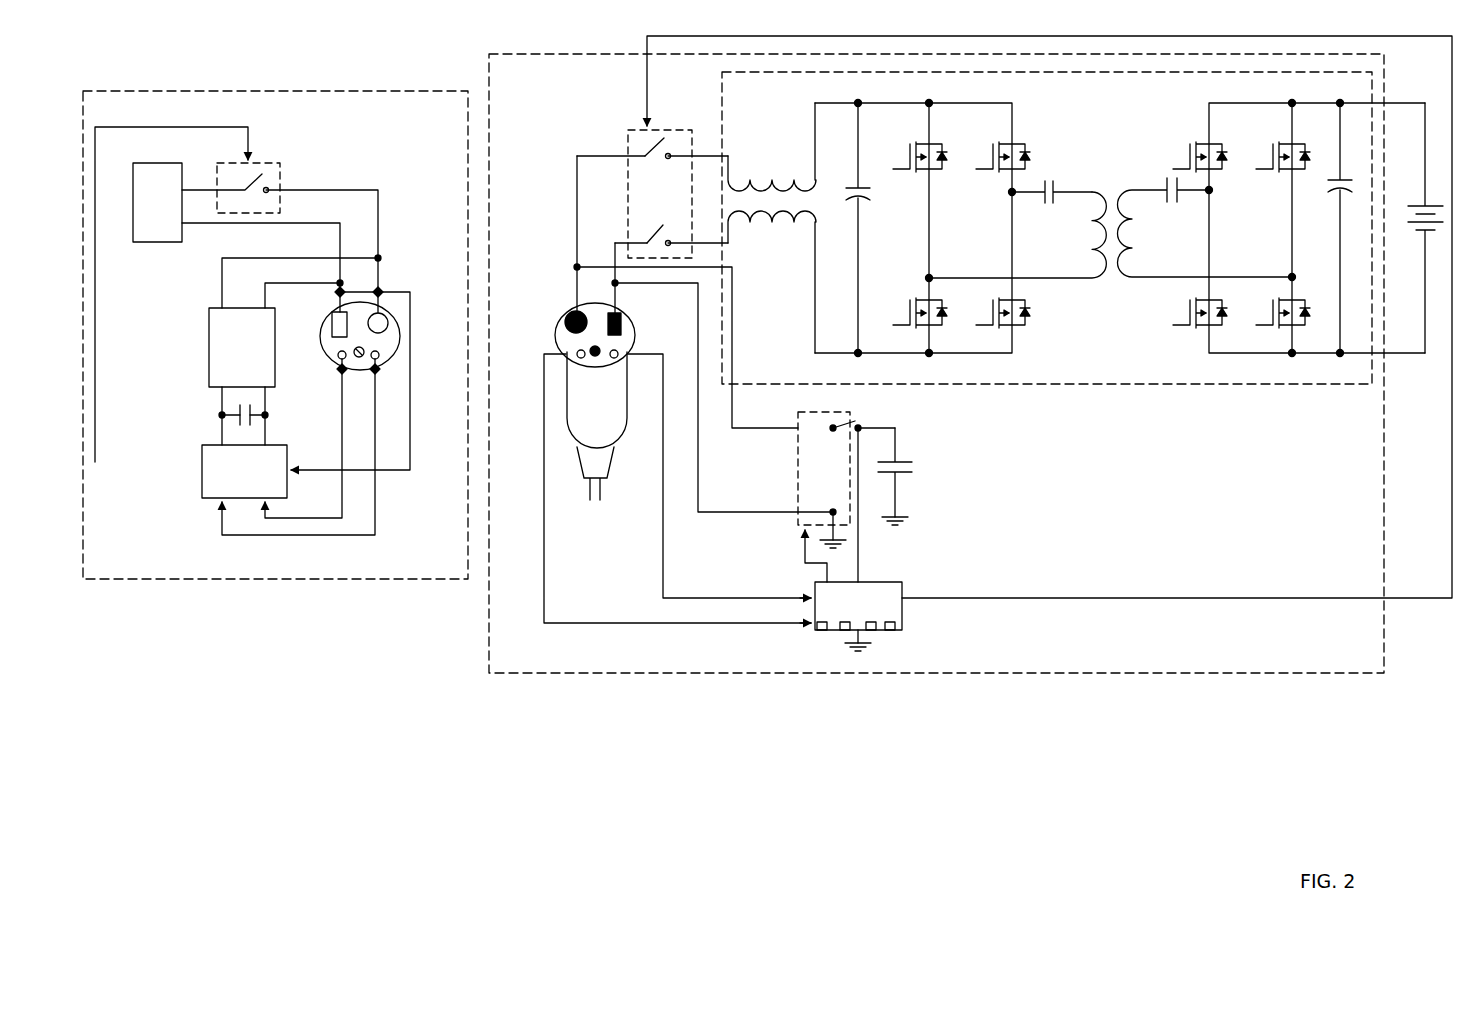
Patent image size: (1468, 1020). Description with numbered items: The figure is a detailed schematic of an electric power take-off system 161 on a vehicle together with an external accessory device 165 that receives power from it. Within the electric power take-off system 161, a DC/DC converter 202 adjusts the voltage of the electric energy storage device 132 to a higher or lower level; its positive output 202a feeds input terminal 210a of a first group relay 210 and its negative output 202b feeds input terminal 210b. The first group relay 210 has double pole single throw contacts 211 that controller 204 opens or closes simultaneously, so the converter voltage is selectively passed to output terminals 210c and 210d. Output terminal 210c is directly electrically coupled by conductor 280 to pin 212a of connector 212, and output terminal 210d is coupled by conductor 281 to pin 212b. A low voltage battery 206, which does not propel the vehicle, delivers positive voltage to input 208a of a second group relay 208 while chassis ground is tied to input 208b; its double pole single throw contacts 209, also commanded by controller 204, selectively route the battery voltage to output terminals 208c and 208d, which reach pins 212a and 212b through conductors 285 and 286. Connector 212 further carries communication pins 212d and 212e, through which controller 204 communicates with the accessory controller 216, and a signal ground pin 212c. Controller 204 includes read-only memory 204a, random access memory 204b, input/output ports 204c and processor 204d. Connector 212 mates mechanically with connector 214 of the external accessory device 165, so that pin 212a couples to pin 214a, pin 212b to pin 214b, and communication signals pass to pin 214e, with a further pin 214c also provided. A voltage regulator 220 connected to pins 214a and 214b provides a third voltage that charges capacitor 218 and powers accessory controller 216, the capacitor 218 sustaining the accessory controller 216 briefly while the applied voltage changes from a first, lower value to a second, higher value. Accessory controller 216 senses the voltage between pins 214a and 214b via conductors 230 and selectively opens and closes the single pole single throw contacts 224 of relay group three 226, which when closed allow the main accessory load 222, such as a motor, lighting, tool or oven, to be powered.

The electric energy storage device 132 is at (1410, 228).
The electric power take-off system 161 is at (1045, 675).
The external accessory device 165 is at (180, 580).
The DC/DC converter 202 is at (1035, 385).
The output of the DC/DC converter 202a is at (730, 158).
The negative output of the DC/DC converter 202b is at (730, 248).
The controller 204 is at (865, 625).
The read-only memory 204a is at (820, 632).
The random access memory 204b is at (844, 632).
The input/output ports 204c is at (872, 632).
The processor 204d is at (892, 632).
The low voltage battery 206 is at (911, 478).
The second group relay 208 is at (825, 483).
The input of second group relay 208a is at (862, 426).
The input of second group relay 208b is at (838, 525).
The output terminal 208c is at (795, 427).
The output terminal 208d is at (800, 512).
The double pole single throw contacts 209 is at (818, 433).
The first group relay 210 is at (662, 184).
The input terminal 210a is at (693, 152).
The input terminal 210b is at (690, 242).
The output terminal 210c is at (630, 156).
The output terminal 210d is at (628, 240).
The double pole single throw contacts 211 is at (650, 164).
The connector 212 is at (605, 389).
The pin 212a is at (570, 313).
The pin 212b is at (622, 323).
The signal ground pin 212c is at (595, 357).
The pin 212d is at (578, 352).
The pin 212e is at (618, 352).
The connector 214 is at (370, 328).
The pin 214a is at (381, 312).
The pin 214b is at (339, 327).
The ground terminal 214c is at (377, 367).
The pin 214e is at (342, 367).
The accessory controller 216 is at (244, 471).
The capacitor 218 is at (235, 412).
The voltage regulator 220 is at (242, 347).
The main accessory load 222 is at (157, 202).
The contacts 224 is at (262, 158).
The relay group three 226 is at (282, 188).
The conductors 230 is at (395, 468).
The conductor 280 is at (577, 173).
The conductor 281 is at (613, 264).
The conductor 285 is at (734, 355).
The conductor 286 is at (699, 470).